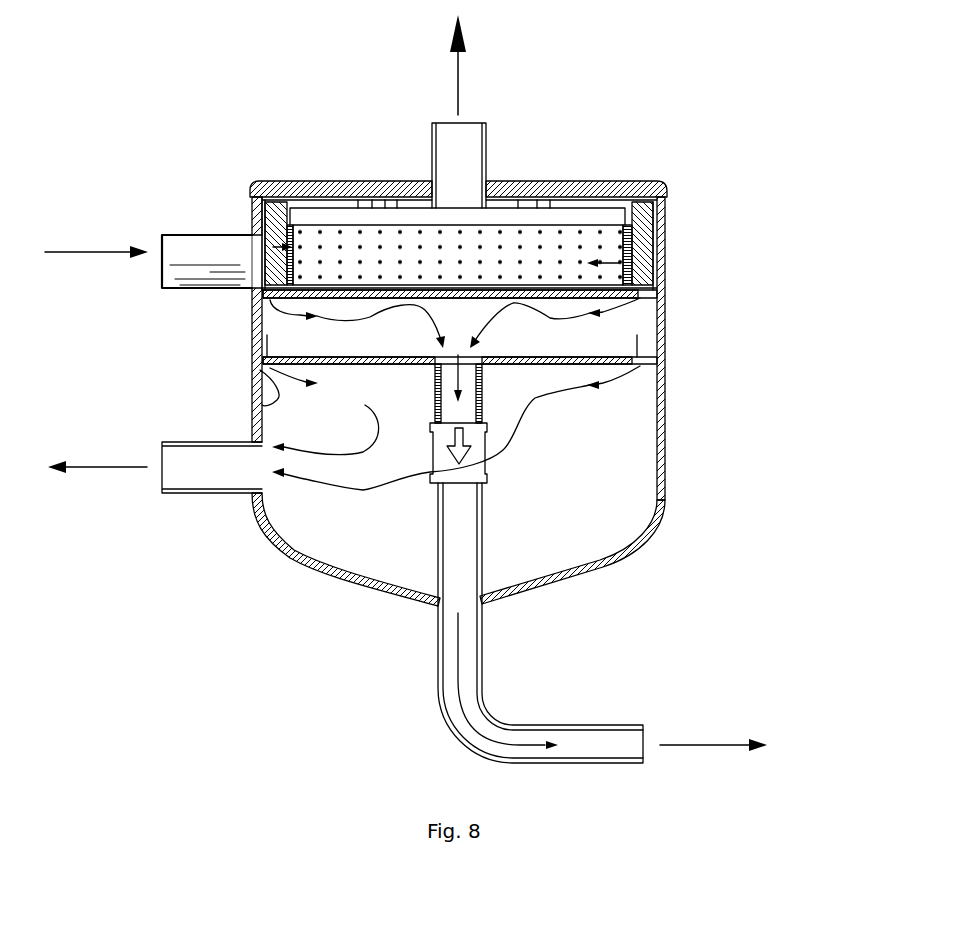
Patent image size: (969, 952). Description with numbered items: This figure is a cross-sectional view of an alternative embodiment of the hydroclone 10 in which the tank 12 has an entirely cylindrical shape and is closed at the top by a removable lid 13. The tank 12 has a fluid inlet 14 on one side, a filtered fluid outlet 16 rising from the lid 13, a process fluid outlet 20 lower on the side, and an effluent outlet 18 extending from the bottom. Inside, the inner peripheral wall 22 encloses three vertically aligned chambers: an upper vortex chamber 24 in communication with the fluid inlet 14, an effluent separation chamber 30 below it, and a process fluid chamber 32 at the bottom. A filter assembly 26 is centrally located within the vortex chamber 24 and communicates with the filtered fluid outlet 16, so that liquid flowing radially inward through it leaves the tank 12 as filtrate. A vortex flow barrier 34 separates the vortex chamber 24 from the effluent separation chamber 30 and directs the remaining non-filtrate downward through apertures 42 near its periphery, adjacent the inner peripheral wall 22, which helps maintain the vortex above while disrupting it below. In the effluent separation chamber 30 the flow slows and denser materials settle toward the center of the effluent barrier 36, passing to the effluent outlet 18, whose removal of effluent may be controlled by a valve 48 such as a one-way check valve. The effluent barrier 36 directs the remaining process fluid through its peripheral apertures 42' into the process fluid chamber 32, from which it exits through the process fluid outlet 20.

The hydroclone 10 is at (696, 154).
The tank 12 is at (657, 522).
The removable lid 13 is at (318, 181).
The fluid inlet 14 is at (200, 289).
The filtered fluid outlet 16 is at (488, 137).
The effluent outlet 18 is at (482, 667).
The process fluid outlet 20 is at (200, 494).
The inner peripheral wall 22 is at (262, 362).
The vortex chamber 24 is at (645, 248).
The filter assembly 26 is at (565, 237).
The effluent separation chamber 30 is at (620, 337).
The process fluid chamber 32 is at (630, 440).
The vortex flow barrier 34 is at (338, 300).
The effluent barrier 36 is at (333, 365).
The apertures 42 is at (608, 321).
The apertures 42' is at (670, 401).
The valve 48 is at (487, 485).